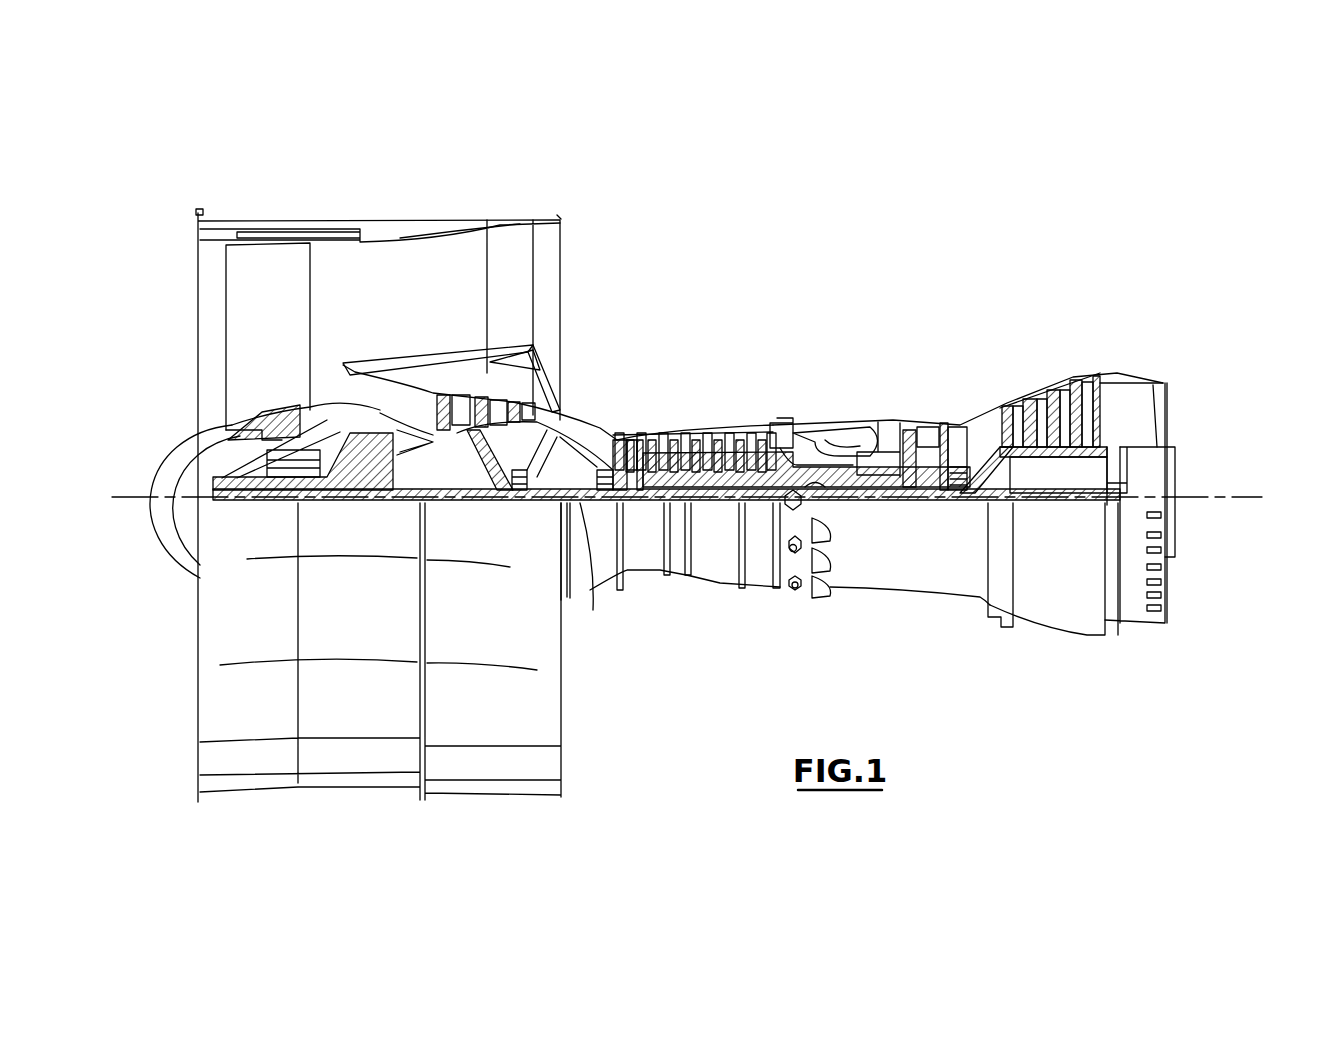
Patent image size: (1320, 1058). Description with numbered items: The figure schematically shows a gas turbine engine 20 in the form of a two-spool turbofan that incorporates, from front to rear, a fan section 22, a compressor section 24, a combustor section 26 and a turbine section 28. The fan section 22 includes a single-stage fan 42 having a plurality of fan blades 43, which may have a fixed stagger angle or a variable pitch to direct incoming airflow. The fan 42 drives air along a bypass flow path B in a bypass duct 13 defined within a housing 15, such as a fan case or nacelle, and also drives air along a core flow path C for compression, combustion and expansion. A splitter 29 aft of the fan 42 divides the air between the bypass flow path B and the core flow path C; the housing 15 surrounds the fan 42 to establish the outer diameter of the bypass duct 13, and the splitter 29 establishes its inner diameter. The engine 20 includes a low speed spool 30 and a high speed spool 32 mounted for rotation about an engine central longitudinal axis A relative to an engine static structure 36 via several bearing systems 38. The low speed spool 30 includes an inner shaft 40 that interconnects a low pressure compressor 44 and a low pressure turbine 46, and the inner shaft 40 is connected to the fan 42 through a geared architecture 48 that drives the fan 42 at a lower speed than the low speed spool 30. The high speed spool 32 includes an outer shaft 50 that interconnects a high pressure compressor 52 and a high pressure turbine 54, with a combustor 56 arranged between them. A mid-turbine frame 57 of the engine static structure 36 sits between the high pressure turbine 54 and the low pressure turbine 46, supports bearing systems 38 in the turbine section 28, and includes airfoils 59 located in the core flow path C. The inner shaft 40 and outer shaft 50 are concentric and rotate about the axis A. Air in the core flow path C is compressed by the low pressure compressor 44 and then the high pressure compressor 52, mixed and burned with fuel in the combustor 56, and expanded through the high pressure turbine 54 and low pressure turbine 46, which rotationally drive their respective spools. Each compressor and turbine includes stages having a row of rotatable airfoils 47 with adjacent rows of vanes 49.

The gas turbine engine 20 is at (840, 272).
The fan section 22 is at (310, 208).
The compressor section 24 is at (618, 401).
The combustor section 26 is at (839, 385).
The turbine section 28 is at (1015, 352).
The bypass duct 13 is at (428, 245).
The housing 15 is at (378, 220).
The fan 42 is at (284, 346).
The fan blades 43 is at (297, 348).
The splitter 29 is at (347, 370).
The low pressure compressor 44 is at (487, 410).
The rotatable airfoils 47 is at (440, 393).
The vanes 49 is at (460, 393).
The high pressure compressor 52 is at (700, 437).
The high speed spool 32 is at (760, 430).
The combustor 56 is at (833, 445).
The high pressure turbine 54 is at (900, 430).
The mid-turbine frame 57 is at (973, 396).
The low pressure turbine 46 is at (1050, 393).
The airfoils 59 is at (963, 437).
The outer shaft 50 is at (833, 477).
The low speed spool 30 is at (718, 519).
The inner shaft 40 is at (593, 580).
The engine static structure 36 is at (760, 602).
The bearing systems 38 is at (520, 480).
The geared architecture 48 is at (388, 483).
The engine central longitudinal axis A is at (1262, 497).
The bypass flow path B is at (335, 292).
The core flow path C is at (375, 394).